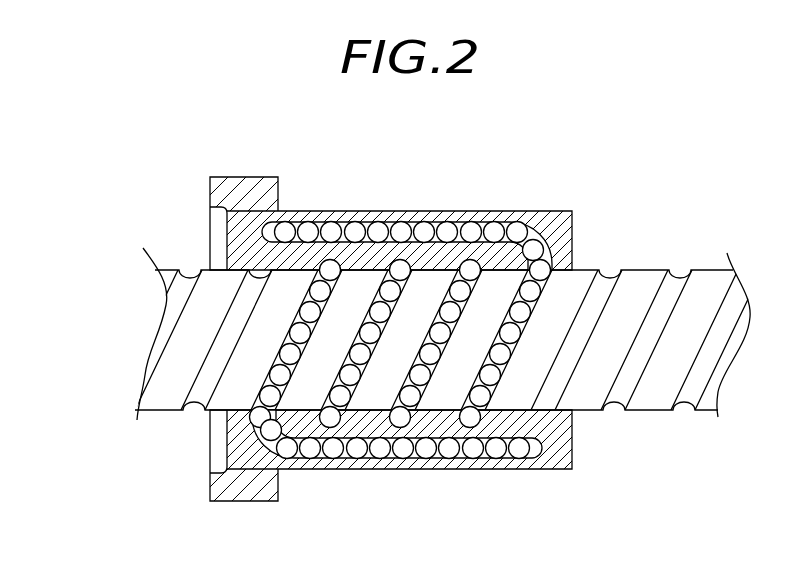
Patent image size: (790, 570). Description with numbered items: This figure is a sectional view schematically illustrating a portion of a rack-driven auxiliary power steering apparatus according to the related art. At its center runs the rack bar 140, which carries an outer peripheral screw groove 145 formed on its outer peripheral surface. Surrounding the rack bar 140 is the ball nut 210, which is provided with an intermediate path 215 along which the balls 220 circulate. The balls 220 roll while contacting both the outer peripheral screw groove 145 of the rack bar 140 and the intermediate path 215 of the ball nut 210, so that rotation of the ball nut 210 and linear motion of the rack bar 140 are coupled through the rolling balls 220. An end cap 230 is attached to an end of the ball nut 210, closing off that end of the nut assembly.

The rack bar 140 is at (157, 375).
The outer peripheral screw groove 145 is at (197, 392).
The ball nut 210 is at (553, 460).
The intermediate path 215 is at (267, 232).
The balls 220 is at (450, 230).
The end cap 230 is at (247, 187).